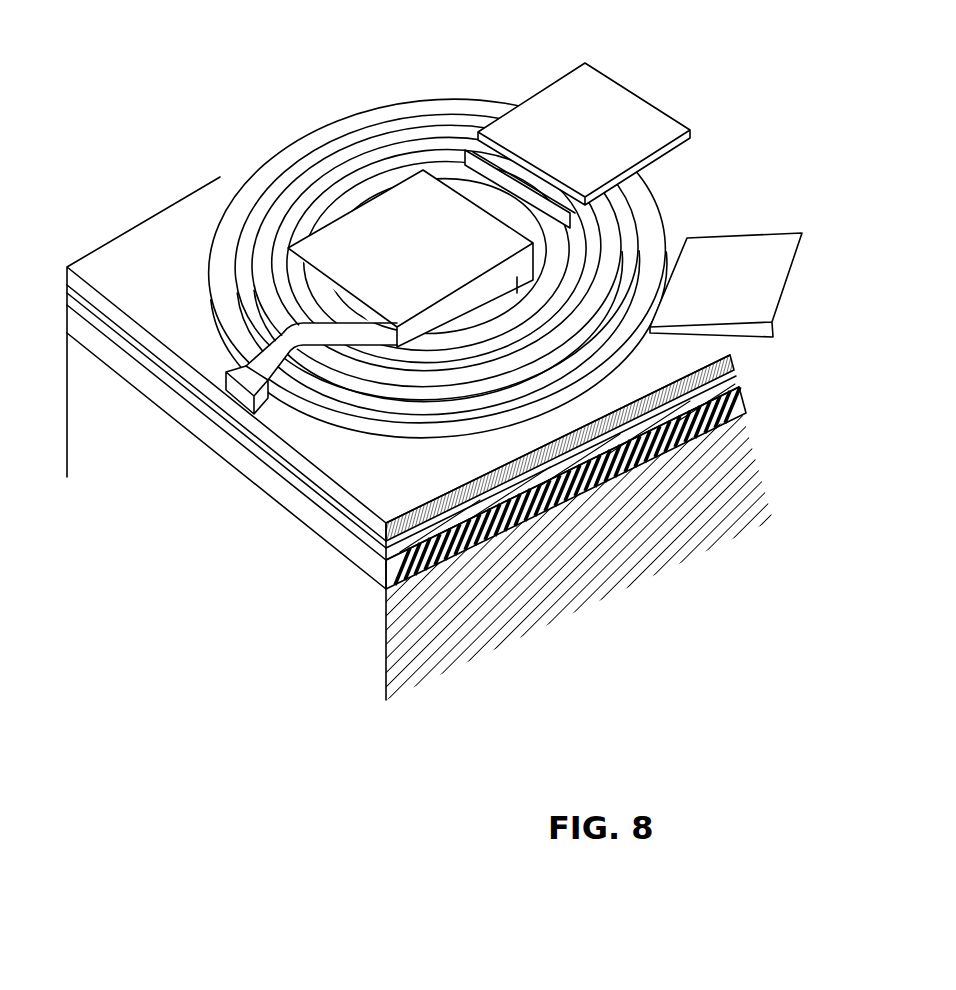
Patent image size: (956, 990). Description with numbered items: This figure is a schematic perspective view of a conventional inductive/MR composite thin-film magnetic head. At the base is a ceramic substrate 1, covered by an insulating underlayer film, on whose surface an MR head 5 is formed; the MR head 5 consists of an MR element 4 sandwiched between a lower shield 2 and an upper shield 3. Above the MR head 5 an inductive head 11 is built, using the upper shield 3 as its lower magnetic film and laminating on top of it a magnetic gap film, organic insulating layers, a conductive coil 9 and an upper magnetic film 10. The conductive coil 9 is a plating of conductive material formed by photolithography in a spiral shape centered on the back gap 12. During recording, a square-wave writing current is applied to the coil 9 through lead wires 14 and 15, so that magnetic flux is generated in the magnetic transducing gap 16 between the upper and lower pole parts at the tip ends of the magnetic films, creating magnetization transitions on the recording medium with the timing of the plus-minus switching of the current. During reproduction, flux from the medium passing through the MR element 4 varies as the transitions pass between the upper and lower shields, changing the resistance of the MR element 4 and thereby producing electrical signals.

The ceramic substrate 1 is at (287, 583).
The lower shield 2 is at (292, 486).
The upper shield 3 is at (272, 448).
The MR element 4 is at (242, 422).
The MR head 5 is at (145, 473).
The conductive coil 9 is at (434, 237).
The upper magnetic film 10 is at (287, 305).
The inductive head 11 is at (287, 150).
The back gap 12 is at (510, 220).
The lead wire 14 is at (565, 95).
The lead wire 15 is at (740, 252).
The magnetic transducing gap 16 is at (220, 405).